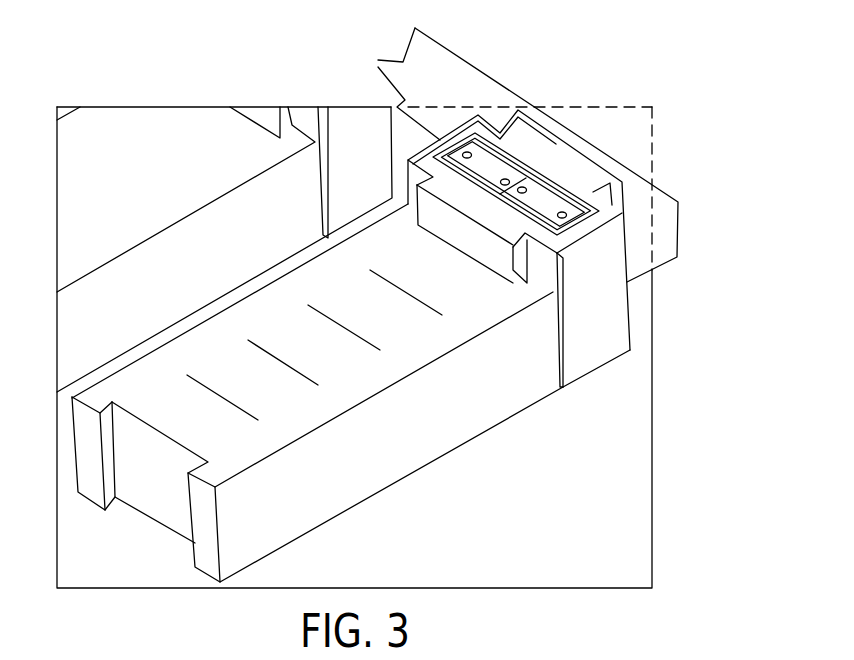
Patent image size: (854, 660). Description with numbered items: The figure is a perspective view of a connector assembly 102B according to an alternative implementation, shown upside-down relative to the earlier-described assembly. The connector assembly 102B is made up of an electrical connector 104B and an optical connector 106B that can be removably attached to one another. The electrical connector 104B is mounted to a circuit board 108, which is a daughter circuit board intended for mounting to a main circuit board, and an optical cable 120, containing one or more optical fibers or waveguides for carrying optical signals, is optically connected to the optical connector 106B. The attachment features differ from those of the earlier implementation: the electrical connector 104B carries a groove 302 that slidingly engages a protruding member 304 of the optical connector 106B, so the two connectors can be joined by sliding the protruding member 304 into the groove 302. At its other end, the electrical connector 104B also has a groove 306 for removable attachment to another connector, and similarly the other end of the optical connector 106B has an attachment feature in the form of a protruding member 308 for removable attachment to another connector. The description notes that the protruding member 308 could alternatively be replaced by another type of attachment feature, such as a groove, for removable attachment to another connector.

The connector assembly 102B is at (607, 311).
The electrical connector 104B is at (543, 397).
The optical connector 106B is at (597, 367).
The circuit board 108 is at (652, 557).
The optical cable 120 is at (477, 80).
The groove 302 is at (521, 283).
The protruding member 304 is at (410, 176).
The groove 306 is at (110, 482).
The protruding member 308 is at (562, 168).